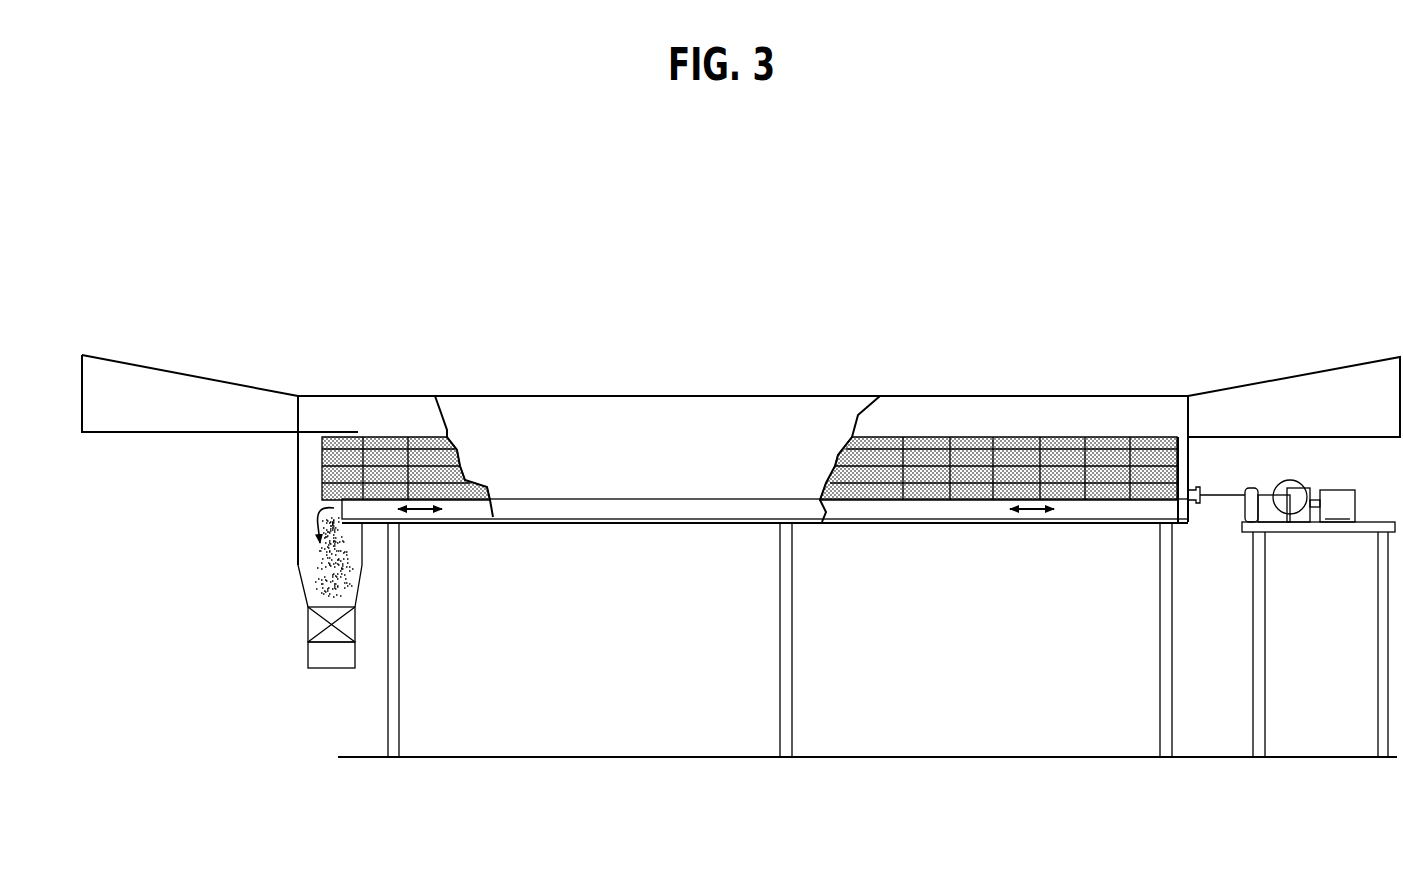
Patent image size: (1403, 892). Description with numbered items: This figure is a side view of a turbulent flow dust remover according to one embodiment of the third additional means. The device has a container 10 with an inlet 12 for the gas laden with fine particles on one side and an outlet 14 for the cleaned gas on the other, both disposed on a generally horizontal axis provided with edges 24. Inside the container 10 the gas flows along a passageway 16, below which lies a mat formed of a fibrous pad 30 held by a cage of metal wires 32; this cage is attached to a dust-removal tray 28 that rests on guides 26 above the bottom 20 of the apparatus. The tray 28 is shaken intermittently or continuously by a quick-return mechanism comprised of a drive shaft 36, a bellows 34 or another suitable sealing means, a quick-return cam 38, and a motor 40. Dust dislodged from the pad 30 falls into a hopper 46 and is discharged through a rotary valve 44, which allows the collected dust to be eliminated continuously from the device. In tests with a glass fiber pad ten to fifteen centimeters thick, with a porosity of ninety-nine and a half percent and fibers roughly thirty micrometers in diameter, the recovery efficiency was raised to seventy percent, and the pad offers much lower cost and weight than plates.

The container 10 is at (618, 394).
The inlet 12 is at (195, 406).
The outlet 14 is at (1372, 378).
The passageway 16 is at (928, 418).
The bottom 20 is at (447, 529).
The edges 24 is at (302, 454).
The guides 26 is at (375, 525).
The dust-removal tray 28 is at (905, 513).
The fibrous pad 30 is at (972, 500).
The cage of metal wires 32 is at (915, 500).
The bellows 34 is at (1198, 523).
The drive shaft 36 is at (1266, 498).
The quick-return cam 38 is at (1290, 478).
The motor 40 is at (1335, 490).
The rotary valve 44 is at (307, 625).
The hopper 46 is at (313, 567).